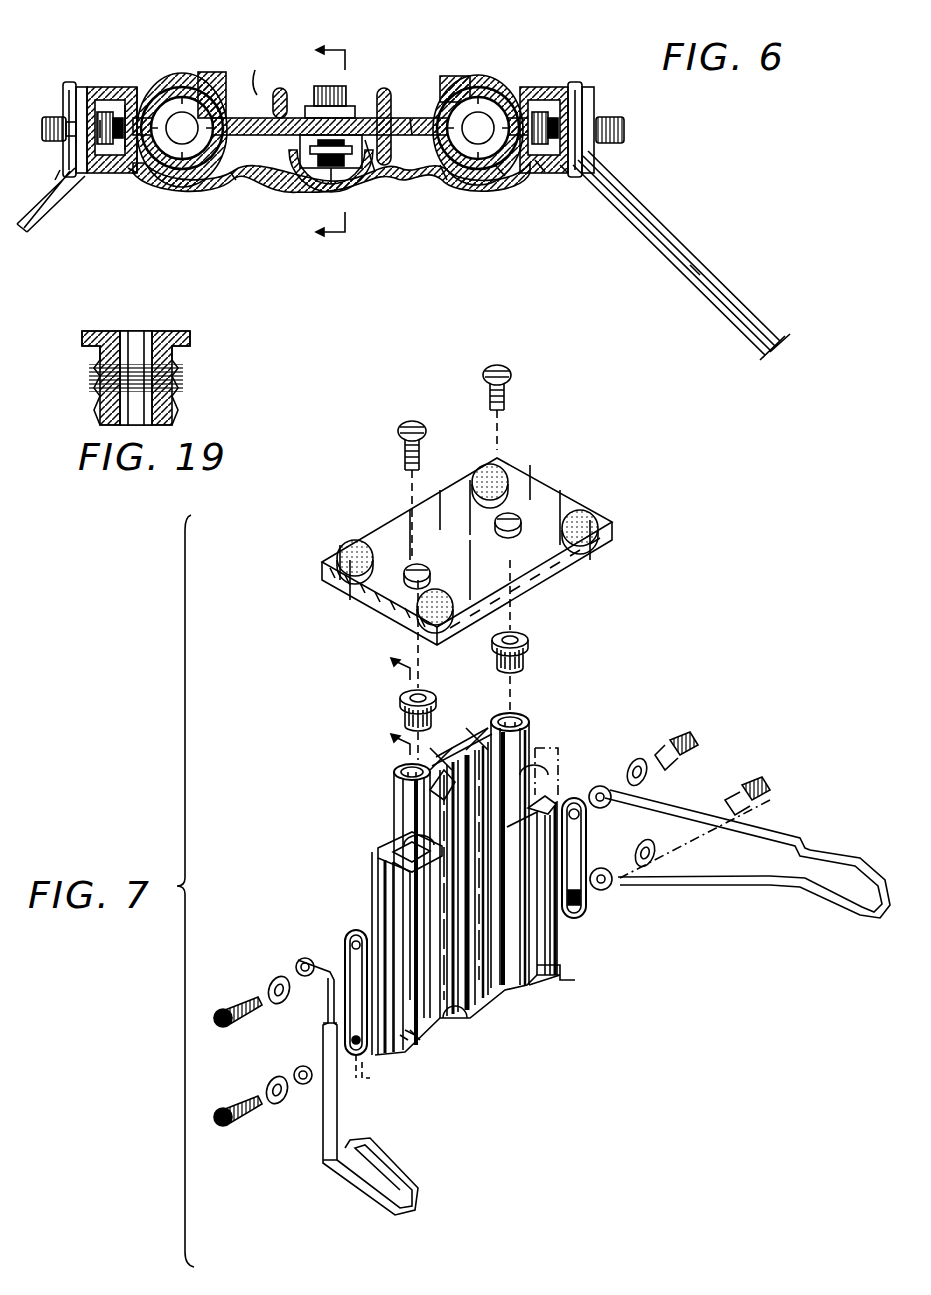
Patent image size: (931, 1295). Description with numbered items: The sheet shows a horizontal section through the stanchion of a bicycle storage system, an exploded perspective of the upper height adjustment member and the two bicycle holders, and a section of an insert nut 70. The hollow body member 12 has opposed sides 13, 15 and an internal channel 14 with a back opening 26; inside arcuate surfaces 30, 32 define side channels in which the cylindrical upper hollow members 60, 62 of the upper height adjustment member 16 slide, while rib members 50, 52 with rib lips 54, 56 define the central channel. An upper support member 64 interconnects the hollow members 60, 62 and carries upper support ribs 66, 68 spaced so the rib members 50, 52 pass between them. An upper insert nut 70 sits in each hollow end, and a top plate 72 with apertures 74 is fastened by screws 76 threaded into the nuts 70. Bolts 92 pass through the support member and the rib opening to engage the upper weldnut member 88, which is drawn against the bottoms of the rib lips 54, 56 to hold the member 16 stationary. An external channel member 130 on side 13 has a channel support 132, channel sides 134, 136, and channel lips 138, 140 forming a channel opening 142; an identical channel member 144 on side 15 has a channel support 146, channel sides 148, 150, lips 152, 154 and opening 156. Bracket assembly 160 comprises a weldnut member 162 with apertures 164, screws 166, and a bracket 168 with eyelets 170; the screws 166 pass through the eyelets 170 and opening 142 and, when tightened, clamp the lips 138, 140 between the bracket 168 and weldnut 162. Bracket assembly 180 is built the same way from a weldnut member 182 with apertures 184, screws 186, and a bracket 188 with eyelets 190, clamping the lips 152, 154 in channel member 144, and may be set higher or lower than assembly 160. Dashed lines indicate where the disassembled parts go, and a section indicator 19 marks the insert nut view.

In FIG. 6, the hollow body member 12 is at (400, 198).
In FIG. 6, the side 13 is at (130, 171).
In FIG. 7, the side 13 is at (528, 985).
In FIG. 6, the internal channel 14 is at (330, 140).
In FIG. 6, the side 15 is at (500, 176).
In FIG. 7, the side 15 is at (414, 1040).
In FIG. 6, the upper height adjustment member 16 is at (412, 118).
In FIG. 7, the upper height adjustment member 16 is at (521, 735).
In FIG. 7, the section indicator 19 is at (387, 699).
In FIG. 6, the back opening 26 is at (240, 120).
In FIG. 6, the inside arcuate surface 30 is at (206, 85).
In FIG. 6, the inside arcuate surface 32 is at (441, 186).
In FIG. 6, the rib member 50 is at (376, 185).
In FIG. 6, the rib member 52 is at (290, 176).
In FIG. 6, the rib lip 54 is at (340, 186).
In FIG. 6, the rib lip 56 is at (283, 95).
In FIG. 6, the upper hollow member 60 is at (201, 100).
In FIG. 7, the upper hollow member 60 is at (512, 745).
In FIG. 6, the upper hollow member 62 is at (466, 86).
In FIG. 7, the upper hollow member 62 is at (392, 785).
In FIG. 6, the upper support member 64 is at (196, 166).
In FIG. 7, the upper support member 64 is at (436, 798).
In FIG. 6, the upper support rib 66 is at (231, 174).
In FIG. 7, the upper support rib 66 is at (462, 740).
In FIG. 6, the upper support rib 68 is at (384, 95).
In FIG. 7, the upper support rib 68 is at (440, 770).
In FIG. 19, the upper insert nut 70 is at (178, 385).
In FIG. 7, the upper insert nut 70 is at (528, 640).
In FIG. 7, the top plate 72 is at (560, 505).
In FIG. 7, the aperture 74 is at (512, 515).
In FIG. 7, the screw 76 is at (408, 448).
In FIG. 6, the upper weldnut member 88 is at (306, 100).
In FIG. 6, the bolt 92 is at (338, 100).
In FIG. 7, the external channel member 130 is at (560, 980).
In FIG. 7, the channel support 132 is at (548, 800).
In FIG. 6, the channel side 134 is at (110, 150).
In FIG. 6, the channel side 136 is at (120, 95).
In FIG. 7, the channel side 136 is at (570, 952).
In FIG. 6, the channel lip 138 is at (71, 150).
In FIG. 6, the channel lip 140 is at (103, 137).
In FIG. 7, the channel lip 140 is at (555, 800).
In FIG. 7, the channel opening 142 is at (516, 1010).
In FIG. 6, the external channel member 144 is at (585, 96).
In FIG. 7, the external channel member 144 is at (366, 893).
In FIG. 6, the channel support 146 is at (545, 110).
In FIG. 7, the channel support 146 is at (410, 874).
In FIG. 6, the channel side 148 is at (560, 112).
In FIG. 7, the channel side 148 is at (415, 1045).
In FIG. 6, the channel side 150 is at (540, 168).
In FIG. 7, the channel side 150 is at (392, 870).
In FIG. 6, the channel lip 152 is at (578, 100).
In FIG. 7, the channel lip 152 is at (406, 1042).
In FIG. 6, the channel lip 154 is at (560, 176).
In FIG. 7, the channel lip 154 is at (372, 888).
In FIG. 7, the channel opening 156 is at (418, 992).
In FIG. 6, the bracket assembly 160 is at (56, 230).
In FIG. 7, the bracket assembly 160 is at (712, 775).
In FIG. 6, the weldnut member 162 is at (100, 105).
In FIG. 7, the weldnut member 162 is at (580, 848).
In FIG. 7, the aperture 164 is at (612, 797).
In FIG. 6, the screw 166 is at (60, 116).
In FIG. 7, the screw 166 is at (690, 732).
In FIG. 6, the bracket 168 is at (70, 190).
In FIG. 7, the bracket 168 is at (810, 845).
In FIG. 7, the eyelet 170 is at (605, 795).
In FIG. 6, the bracket assembly 180 is at (650, 214).
In FIG. 7, the bracket assembly 180 is at (322, 1144).
In FIG. 6, the weldnut member 182 is at (594, 120).
In FIG. 7, the weldnut member 182 is at (345, 945).
In FIG. 7, the aperture 184 is at (345, 918).
In FIG. 6, the screw 186 is at (622, 126).
In FIG. 7, the screw 186 is at (222, 1008).
In FIG. 6, the bracket 188 is at (692, 264).
In FIG. 7, the bracket 188 is at (365, 1185).
In FIG. 7, the eyelet 190 is at (298, 960).